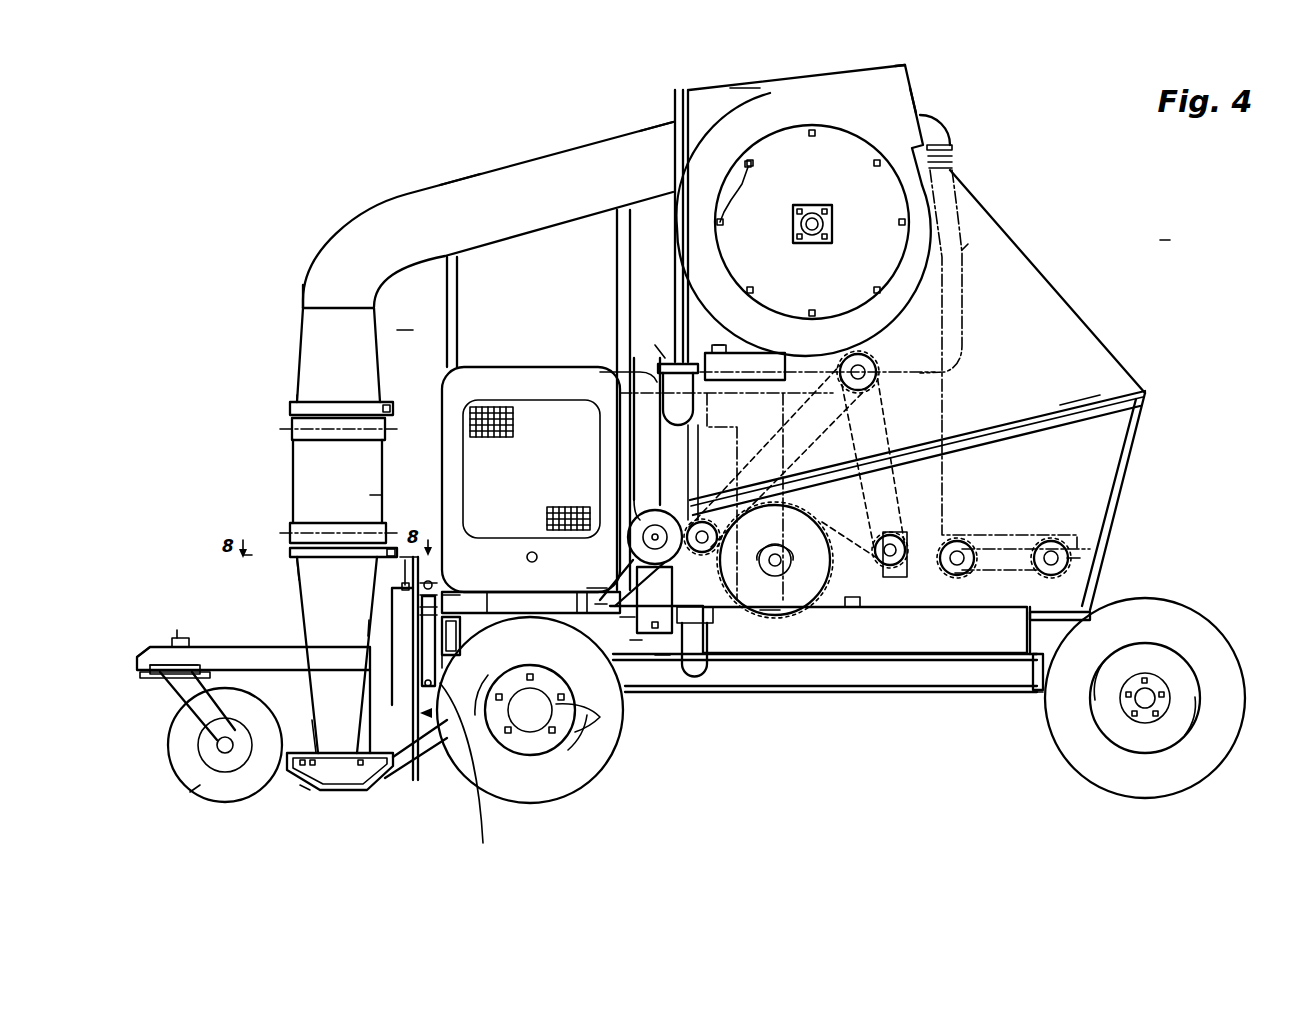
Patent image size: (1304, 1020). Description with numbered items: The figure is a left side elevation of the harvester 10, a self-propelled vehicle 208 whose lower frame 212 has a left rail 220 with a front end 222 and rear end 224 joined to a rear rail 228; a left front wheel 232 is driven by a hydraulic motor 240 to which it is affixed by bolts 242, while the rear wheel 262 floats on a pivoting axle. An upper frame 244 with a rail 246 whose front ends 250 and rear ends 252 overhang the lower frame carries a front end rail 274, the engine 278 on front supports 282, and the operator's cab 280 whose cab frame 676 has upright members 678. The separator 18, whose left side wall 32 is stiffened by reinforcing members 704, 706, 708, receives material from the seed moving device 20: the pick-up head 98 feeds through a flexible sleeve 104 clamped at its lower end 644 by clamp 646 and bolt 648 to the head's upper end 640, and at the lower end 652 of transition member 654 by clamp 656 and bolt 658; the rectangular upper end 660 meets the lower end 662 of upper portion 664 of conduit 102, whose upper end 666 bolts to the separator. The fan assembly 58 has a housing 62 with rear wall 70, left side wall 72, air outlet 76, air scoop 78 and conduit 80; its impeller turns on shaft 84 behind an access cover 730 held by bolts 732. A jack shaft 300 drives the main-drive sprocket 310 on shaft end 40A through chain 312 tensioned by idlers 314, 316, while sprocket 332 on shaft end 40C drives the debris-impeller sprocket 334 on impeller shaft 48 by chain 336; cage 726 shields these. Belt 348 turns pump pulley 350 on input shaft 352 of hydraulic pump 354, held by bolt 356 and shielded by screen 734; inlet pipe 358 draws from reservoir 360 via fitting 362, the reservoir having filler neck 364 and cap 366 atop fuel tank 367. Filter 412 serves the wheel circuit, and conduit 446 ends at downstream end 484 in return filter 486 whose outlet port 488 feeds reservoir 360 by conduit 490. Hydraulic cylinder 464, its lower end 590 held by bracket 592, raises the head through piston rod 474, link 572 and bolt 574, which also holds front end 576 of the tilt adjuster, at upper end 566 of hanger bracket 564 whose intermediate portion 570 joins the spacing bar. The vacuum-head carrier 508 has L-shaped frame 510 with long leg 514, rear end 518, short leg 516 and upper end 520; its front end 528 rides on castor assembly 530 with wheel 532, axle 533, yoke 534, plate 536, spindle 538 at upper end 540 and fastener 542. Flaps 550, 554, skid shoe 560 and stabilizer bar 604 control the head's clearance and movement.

The harvester 10 is at (1165, 238).
The separator 18 is at (744, 83).
The seed moving device 20 is at (366, 493).
The left side wall 32 is at (1015, 262).
The left end of front kicker shaft 40A is at (883, 565).
The left end of rear kicker shaft 40C is at (963, 575).
The impeller shaft 48 is at (1033, 557).
The fan assembly 58 is at (908, 64).
The fan housing 62 is at (843, 78).
The rear wall 70 is at (950, 160).
The left side wall 72 is at (913, 217).
The air outlet 76 is at (917, 103).
The air scoop 78 is at (949, 127).
The conduit 80 is at (965, 247).
The shaft 84 is at (820, 210).
The pick-up head 98 is at (325, 594).
The conduit 102 is at (552, 138).
The flexible sleeve 104 is at (385, 430).
The self-propelled vehicle 208 is at (939, 697).
The lower frame 212 is at (893, 698).
The left rail 220 is at (840, 668).
The front end 222 is at (635, 640).
The rear end 224 is at (1020, 690).
The rear rail 228 is at (1040, 665).
The left front wheel 232 is at (592, 785).
The hydraulic motor 240 is at (527, 715).
The bolts 242 is at (560, 717).
The upper frame 244 is at (597, 602).
The rail 246 is at (1050, 618).
The front ends 250 is at (600, 600).
The rear ends 252 is at (1060, 612).
The rear wheel 262 is at (1230, 655).
The front end rail 274 is at (460, 645).
The engine 278 is at (545, 353).
The operator's cab 280 is at (441, 325).
The front supports 282 is at (503, 611).
The jack shaft 300 is at (866, 357).
The kicker shaft main-drive sprocket 310 is at (797, 523).
The chain 312 is at (942, 368).
The idler 314 is at (790, 445).
The idler 316 is at (903, 535).
The fifth shaft sprocket 332 is at (948, 563).
The debris-impeller sprocket 334 is at (1065, 560).
The chain 336 is at (1040, 550).
The belt 348 is at (640, 625).
The hydraulic-pump pulley 350 is at (664, 516).
The input shaft 352 is at (630, 525).
The hydraulic pump 354 is at (625, 570).
The bolt 356 is at (627, 617).
The pump inlet pipe 358 is at (662, 655).
The hydraulic reservoir 360 is at (777, 600).
The fitting 362 is at (770, 600).
The filler neck 364 is at (723, 352).
The cap 366 is at (723, 338).
The fuel tank 367 is at (985, 635).
The high-pressure hydraulic filter 412 is at (698, 680).
The conduit 446 is at (643, 440).
The hydraulic cylinder 464 is at (433, 613).
The piston rod 474 is at (433, 607).
The downstream end 484 is at (633, 358).
The return-line hydraulic filter 486 is at (655, 345).
The outlet port 488 is at (718, 343).
The conduit 490 is at (702, 401).
The vacuum-head carrier 508 is at (255, 634).
The L-shaped frame 510 is at (224, 668).
The long leg 514 is at (327, 662).
The short leg 516 is at (410, 727).
The rear end 518 is at (307, 637).
The upper end 520 is at (372, 650).
The front end 528 is at (135, 657).
The castor assembly 530 is at (204, 803).
The wheel 532 is at (197, 787).
The axle 533 is at (217, 747).
The yoke 534 is at (185, 700).
The plate 536 is at (155, 670).
The spindle 538 is at (180, 640).
The upper end 540 is at (170, 677).
The fastener 542 is at (190, 642).
The first rubber flap 550 is at (345, 793).
The second rubber flap 554 is at (316, 737).
The skid shoe 560 is at (320, 793).
The hanger bracket 564 is at (437, 740).
The upper end 566 is at (404, 575).
The intermediate portion 570 is at (367, 628).
The link 572 is at (437, 585).
The bolt 574 is at (440, 592).
The front end 576 is at (445, 600).
The lower end 590 is at (483, 843).
The bracket 592 is at (445, 665).
The stabilizer bar 604 is at (440, 745).
The upper end 640 is at (298, 576).
The lower end 644 is at (293, 530).
The clamp 646 is at (300, 547).
The bolt 648 is at (390, 548).
The lower end 652 is at (300, 395).
The transition member 654 is at (300, 345).
The clamp 656 is at (292, 425).
The bolt 658 is at (393, 403).
The upper end 660 is at (300, 314).
The lower end 662 is at (303, 292).
The upper portion 664 is at (470, 180).
The upper end 666 is at (653, 130).
The cab frame 676 is at (614, 250).
The upright members 678 is at (452, 280).
The reinforcing member 704 is at (670, 162).
The reinforcing member 706 is at (1088, 404).
The reinforcing member 708 is at (1140, 418).
The cage 726 is at (943, 407).
The access cover 730 is at (833, 140).
The bolts 732 is at (742, 188).
The screen 734 is at (818, 420).